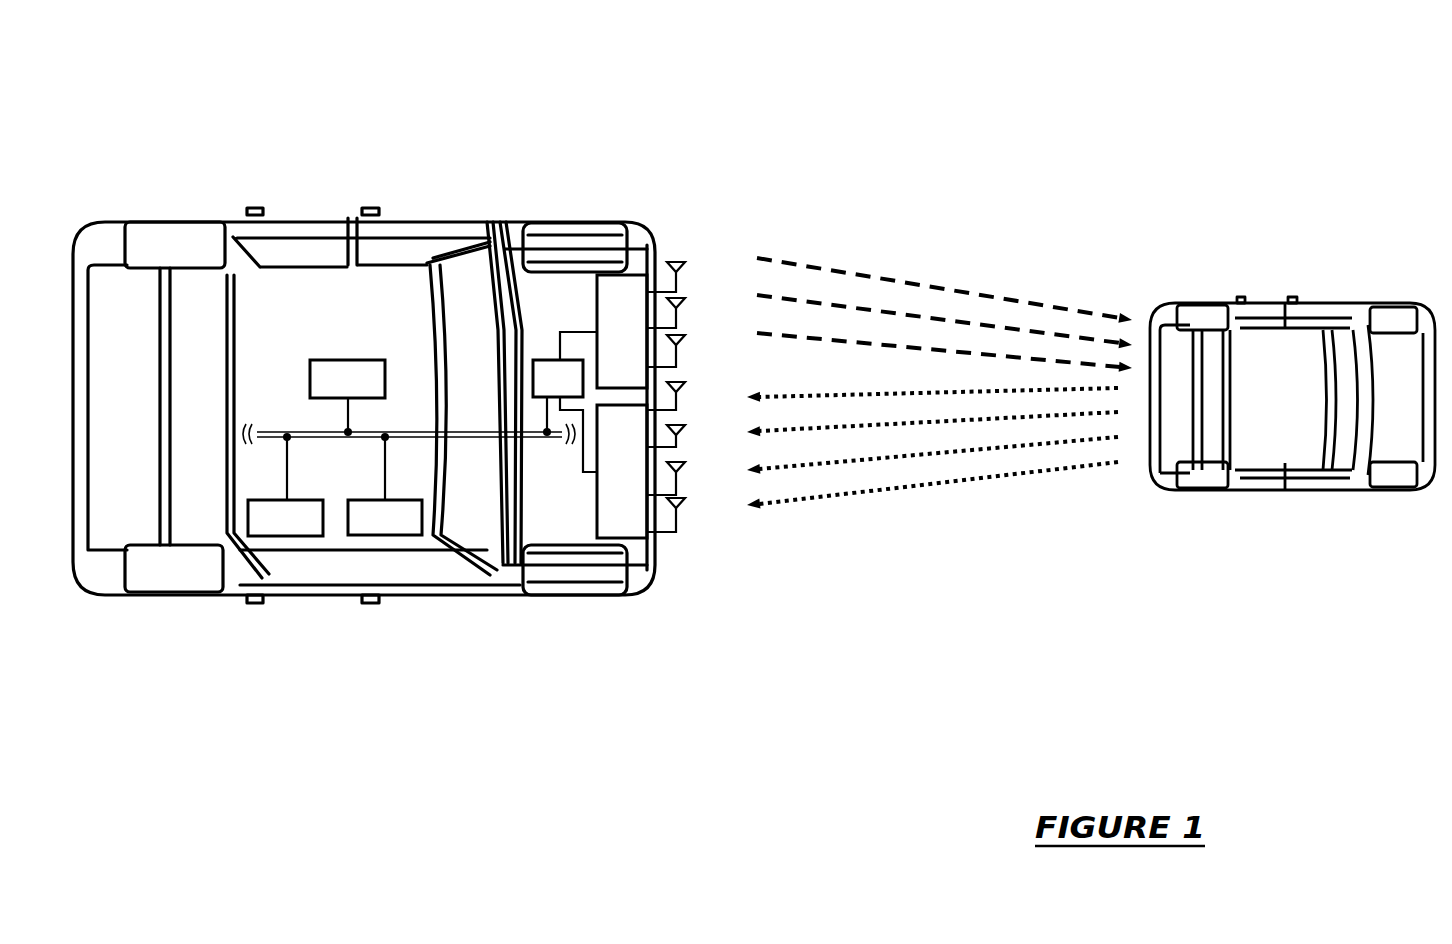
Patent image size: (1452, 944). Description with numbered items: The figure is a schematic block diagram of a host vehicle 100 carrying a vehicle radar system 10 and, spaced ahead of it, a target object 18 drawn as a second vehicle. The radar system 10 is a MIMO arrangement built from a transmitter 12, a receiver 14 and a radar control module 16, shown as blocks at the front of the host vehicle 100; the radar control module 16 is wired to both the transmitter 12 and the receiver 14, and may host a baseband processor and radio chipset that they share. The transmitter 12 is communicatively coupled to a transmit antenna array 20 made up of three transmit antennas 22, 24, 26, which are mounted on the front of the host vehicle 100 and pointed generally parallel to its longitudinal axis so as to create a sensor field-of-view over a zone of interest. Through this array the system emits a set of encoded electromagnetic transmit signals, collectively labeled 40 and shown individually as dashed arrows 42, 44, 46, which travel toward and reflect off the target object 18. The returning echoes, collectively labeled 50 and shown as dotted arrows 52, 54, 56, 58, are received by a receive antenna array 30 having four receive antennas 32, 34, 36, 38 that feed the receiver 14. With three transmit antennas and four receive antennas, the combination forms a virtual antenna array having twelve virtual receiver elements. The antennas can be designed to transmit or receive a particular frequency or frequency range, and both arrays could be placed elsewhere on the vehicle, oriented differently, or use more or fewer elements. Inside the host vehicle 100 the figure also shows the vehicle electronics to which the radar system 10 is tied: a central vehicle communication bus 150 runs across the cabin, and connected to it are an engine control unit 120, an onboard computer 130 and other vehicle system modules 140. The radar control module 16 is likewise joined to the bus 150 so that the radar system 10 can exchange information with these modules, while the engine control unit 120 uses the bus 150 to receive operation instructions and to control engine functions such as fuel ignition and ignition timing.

The host vehicle 100 is at (421, 118).
The vehicle radar system 10 is at (634, 338).
The transmitter 12 is at (622, 331).
The receiver 14 is at (622, 471).
The radar control module 16 is at (558, 378).
The transmit antenna array 20 is at (702, 278).
The transmit antenna 22 is at (684, 263).
The transmit antenna 24 is at (684, 299).
The transmit antenna 26 is at (684, 336).
The receive antenna array 30 is at (702, 469).
The receive antenna 32 is at (684, 383).
The receive antenna 34 is at (684, 426).
The receive antenna 36 is at (684, 463).
The receive antenna 38 is at (684, 499).
The transmitted signals 40 is at (944, 280).
The encoded transmit signal 42 is at (922, 287).
The encoded transmit signal 44 is at (813, 304).
The encoded transmit signal 46 is at (783, 339).
The received signals 50 is at (932, 458).
The reflected signal 52 is at (785, 396).
The reflected signal 54 is at (785, 430).
The reflected signal 56 is at (785, 467).
The reflected signal 58 is at (785, 502).
The target object 18 is at (1312, 292).
The engine control unit 120 is at (348, 361).
The onboard computer 130 is at (348, 518).
The vehicle system modules 140 is at (248, 518).
The central vehicle communication bus 150 is at (452, 432).